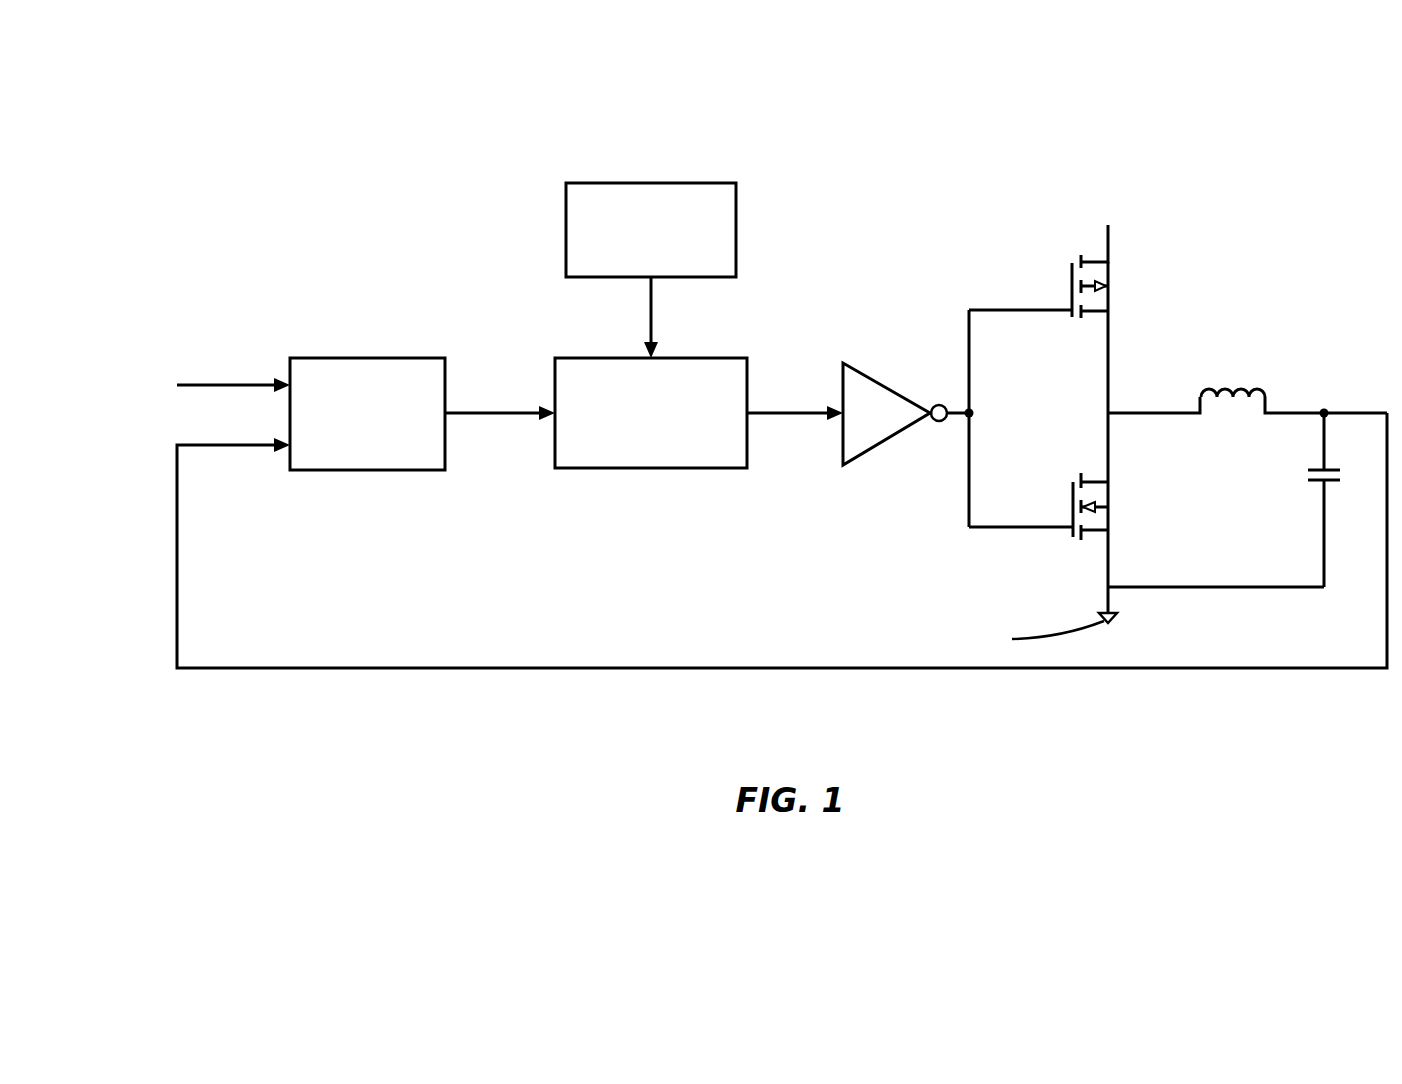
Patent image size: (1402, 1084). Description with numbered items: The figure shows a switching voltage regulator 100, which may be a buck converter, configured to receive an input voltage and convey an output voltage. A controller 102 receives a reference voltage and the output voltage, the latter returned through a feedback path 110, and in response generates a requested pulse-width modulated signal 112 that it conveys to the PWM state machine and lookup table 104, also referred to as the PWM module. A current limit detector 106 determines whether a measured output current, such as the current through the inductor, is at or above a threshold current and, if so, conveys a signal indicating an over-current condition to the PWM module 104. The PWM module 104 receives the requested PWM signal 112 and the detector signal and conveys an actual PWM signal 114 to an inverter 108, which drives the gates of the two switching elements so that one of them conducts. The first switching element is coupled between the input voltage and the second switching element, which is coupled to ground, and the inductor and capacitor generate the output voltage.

The switching voltage regulator 100 is at (1309, 124).
The controller 102 is at (348, 358).
The pulse-width modulation (PWM) state machine and lookup table 104 is at (673, 358).
The current limit detector 106 is at (663, 183).
The inverter 108 is at (860, 370).
The feedback path 110 is at (284, 718).
The requested pulse-width modulated (PWM) signal 112 is at (503, 415).
The actual PWM signal 114 is at (788, 415).